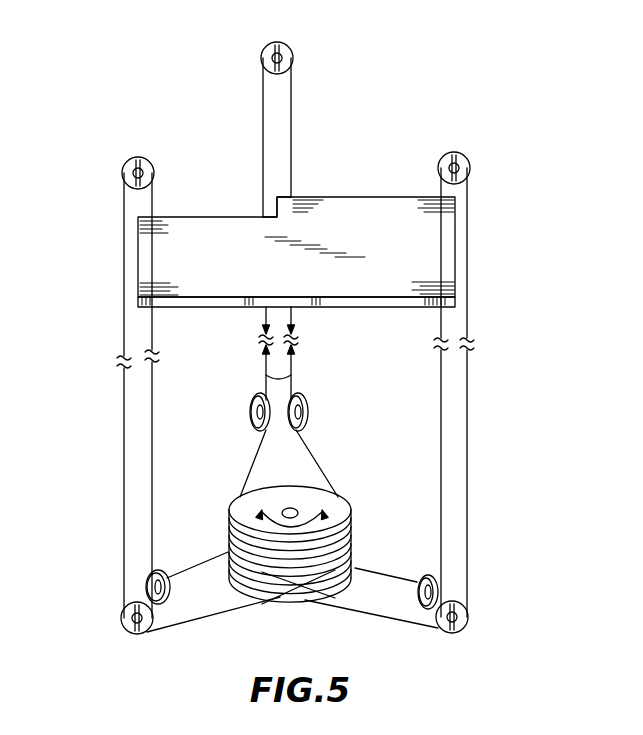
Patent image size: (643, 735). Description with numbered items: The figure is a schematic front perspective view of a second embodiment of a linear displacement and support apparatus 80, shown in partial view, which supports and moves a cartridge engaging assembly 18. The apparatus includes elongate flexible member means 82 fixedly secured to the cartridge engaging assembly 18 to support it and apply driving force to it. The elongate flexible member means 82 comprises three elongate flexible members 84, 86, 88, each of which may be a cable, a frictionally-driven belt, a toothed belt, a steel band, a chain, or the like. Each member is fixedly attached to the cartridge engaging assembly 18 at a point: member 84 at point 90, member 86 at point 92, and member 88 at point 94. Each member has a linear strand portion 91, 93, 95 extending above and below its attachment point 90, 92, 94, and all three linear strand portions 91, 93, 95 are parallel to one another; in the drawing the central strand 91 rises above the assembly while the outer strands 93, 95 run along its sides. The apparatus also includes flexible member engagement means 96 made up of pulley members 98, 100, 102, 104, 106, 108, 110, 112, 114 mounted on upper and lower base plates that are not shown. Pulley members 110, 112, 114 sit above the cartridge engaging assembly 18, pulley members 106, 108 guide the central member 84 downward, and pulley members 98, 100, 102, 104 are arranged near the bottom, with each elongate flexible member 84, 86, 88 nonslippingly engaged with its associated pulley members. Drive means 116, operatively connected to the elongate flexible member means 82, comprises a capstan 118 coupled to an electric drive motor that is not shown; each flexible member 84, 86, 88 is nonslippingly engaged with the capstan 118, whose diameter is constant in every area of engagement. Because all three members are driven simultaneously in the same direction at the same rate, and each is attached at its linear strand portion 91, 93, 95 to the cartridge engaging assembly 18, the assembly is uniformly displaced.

The linear displacement and support apparatus 80 is at (106, 192).
The cartridge engaging assembly 18 is at (203, 225).
The linear strand portion 91 is at (293, 148).
The attachment point 90 is at (284, 199).
The pulley member 110 is at (149, 162).
The pulley member 112 is at (290, 52).
The pulley member 114 is at (468, 162).
The attachment point 94 is at (152, 308).
The linear strand portion 95 is at (154, 352).
The attachment point 92 is at (438, 307).
The linear strand portion 93 is at (438, 338).
The elongate flexible member 84 is at (296, 366).
The pulley member 106 is at (250, 410).
The pulley member 108 is at (308, 410).
The elongate flexible member means 82 is at (246, 466).
The capstan 118 is at (335, 500).
The drive means 116 is at (312, 613).
The pulley member 104 is at (168, 576).
The pulley member 100 is at (420, 583).
The elongate flexible member 88 is at (187, 590).
The elongate flexible member 86 is at (392, 592).
The flexible member engagement means 96 is at (111, 620).
The pulley member 102 is at (132, 632).
The pulley member 98 is at (468, 615).